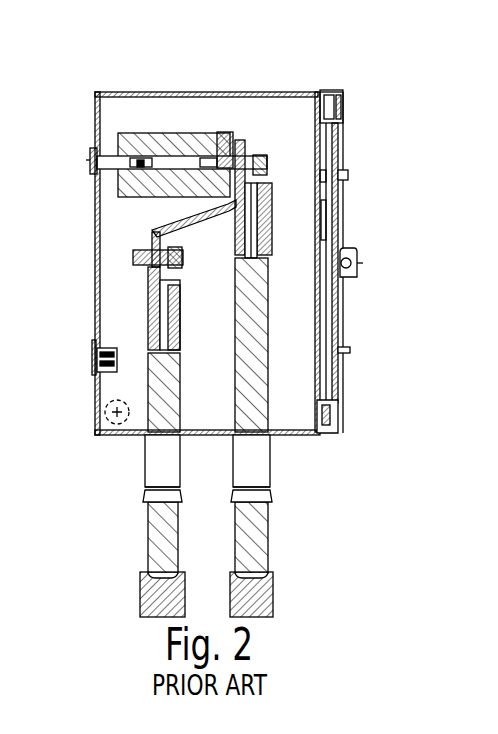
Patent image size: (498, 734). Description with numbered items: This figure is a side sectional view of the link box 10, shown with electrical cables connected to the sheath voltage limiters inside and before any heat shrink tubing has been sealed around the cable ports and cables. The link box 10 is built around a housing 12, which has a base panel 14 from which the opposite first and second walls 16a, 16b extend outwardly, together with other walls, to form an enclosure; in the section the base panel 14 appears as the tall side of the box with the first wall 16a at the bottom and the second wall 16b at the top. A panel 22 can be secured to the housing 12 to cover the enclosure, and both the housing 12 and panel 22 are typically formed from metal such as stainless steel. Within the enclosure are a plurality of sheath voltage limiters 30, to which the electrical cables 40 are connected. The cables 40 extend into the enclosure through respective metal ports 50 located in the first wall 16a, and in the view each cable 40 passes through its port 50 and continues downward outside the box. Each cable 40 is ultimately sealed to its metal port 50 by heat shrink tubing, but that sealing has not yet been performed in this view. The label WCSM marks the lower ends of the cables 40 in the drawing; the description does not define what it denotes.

The link box 10 is at (220, 248).
The housing 12 is at (88, 130).
The base panel 14 is at (95, 282).
The first wall 16a is at (98, 438).
The second wall 16b is at (175, 92).
The panel 22 is at (343, 210).
The sheath voltage limiter 30 is at (180, 133).
The electrical cable 40 is at (235, 300).
The metal port 50 is at (180, 450).
The wire connector WCSM is at (132, 593).